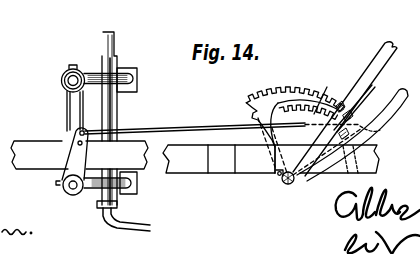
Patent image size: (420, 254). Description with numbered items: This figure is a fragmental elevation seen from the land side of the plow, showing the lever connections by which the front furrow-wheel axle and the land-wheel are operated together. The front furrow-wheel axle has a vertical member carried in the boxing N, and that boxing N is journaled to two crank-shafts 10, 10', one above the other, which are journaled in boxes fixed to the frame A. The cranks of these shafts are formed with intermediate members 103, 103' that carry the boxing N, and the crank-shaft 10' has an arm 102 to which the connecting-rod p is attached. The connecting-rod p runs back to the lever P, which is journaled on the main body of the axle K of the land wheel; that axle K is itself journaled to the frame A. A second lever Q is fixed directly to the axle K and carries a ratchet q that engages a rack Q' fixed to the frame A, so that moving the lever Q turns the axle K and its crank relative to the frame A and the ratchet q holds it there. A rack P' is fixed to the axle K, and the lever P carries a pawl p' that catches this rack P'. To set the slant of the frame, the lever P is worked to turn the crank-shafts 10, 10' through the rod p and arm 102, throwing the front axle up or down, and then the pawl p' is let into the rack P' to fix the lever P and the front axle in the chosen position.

The crank-shaft 10 is at (56, 98).
The crank-shaft 10' is at (71, 177).
The arm of the crank-shaft 102 is at (79, 155).
The intermediate member of the crank 103 is at (97, 53).
The intermediate member of the crank 103' is at (100, 210).
The boxing N is at (107, 113).
The connecting-rod p is at (222, 117).
The frame A is at (190, 167).
The rack Q' is at (295, 117).
The ratchet q is at (356, 104).
The lever Q is at (345, 106).
The lever P is at (352, 123).
The rack P' is at (325, 92).
The pawl p' is at (348, 146).
The axle K is at (289, 185).